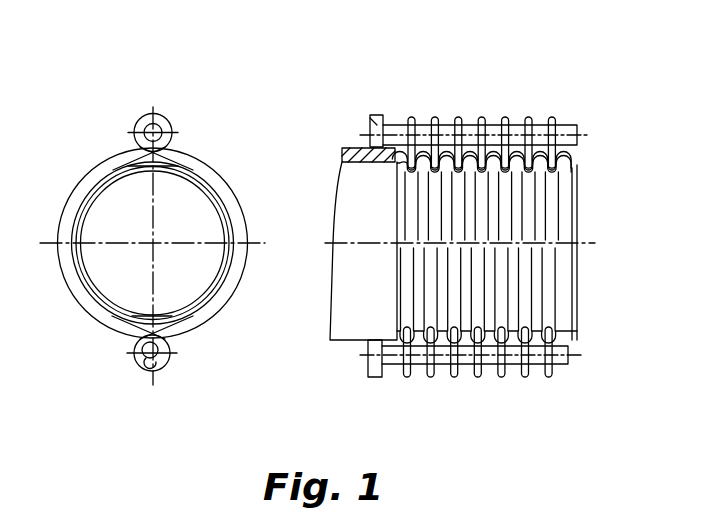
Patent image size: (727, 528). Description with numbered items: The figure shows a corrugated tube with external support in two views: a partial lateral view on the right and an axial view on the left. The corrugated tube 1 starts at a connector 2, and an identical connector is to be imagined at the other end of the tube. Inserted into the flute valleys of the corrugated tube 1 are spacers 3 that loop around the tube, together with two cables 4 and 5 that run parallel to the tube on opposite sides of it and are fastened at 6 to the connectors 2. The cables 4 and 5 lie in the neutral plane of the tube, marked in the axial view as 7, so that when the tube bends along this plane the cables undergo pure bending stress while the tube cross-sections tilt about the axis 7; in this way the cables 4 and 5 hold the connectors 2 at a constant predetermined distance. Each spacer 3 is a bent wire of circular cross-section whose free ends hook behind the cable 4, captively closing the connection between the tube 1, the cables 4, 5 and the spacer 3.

The corrugated tube 1 is at (562, 320).
The connector 2 is at (360, 313).
The spacer 3 is at (90, 186).
The cable 4 is at (141, 372).
The cable 5 is at (143, 118).
The fastening point 6 is at (370, 113).
The neutral plane 7 is at (153, 197).